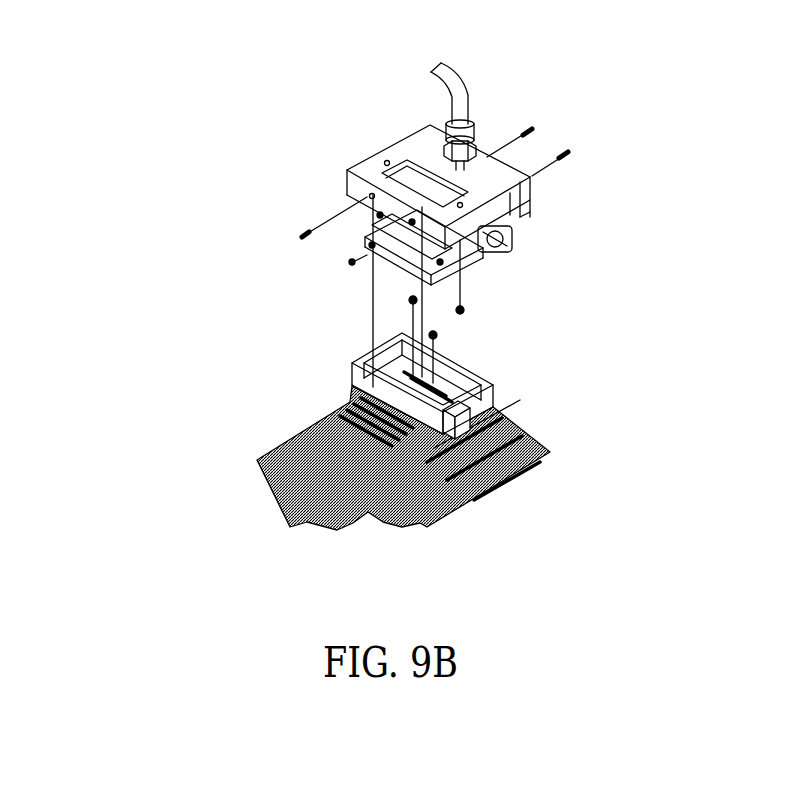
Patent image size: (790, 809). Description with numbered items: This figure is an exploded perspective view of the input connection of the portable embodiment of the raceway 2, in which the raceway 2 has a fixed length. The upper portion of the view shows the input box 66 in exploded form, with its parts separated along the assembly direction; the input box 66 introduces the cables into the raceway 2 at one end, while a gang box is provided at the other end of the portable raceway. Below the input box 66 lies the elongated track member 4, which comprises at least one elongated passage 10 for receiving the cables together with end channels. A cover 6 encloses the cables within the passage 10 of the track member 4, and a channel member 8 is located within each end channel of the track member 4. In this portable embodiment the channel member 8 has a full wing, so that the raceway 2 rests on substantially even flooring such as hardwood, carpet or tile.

The raceway 2 is at (212, 390).
The input box 66 is at (388, 226).
The track member 4 is at (470, 433).
The cover 6 is at (313, 485).
The channel member 8 is at (457, 490).
The elongated passage 10 is at (417, 440).